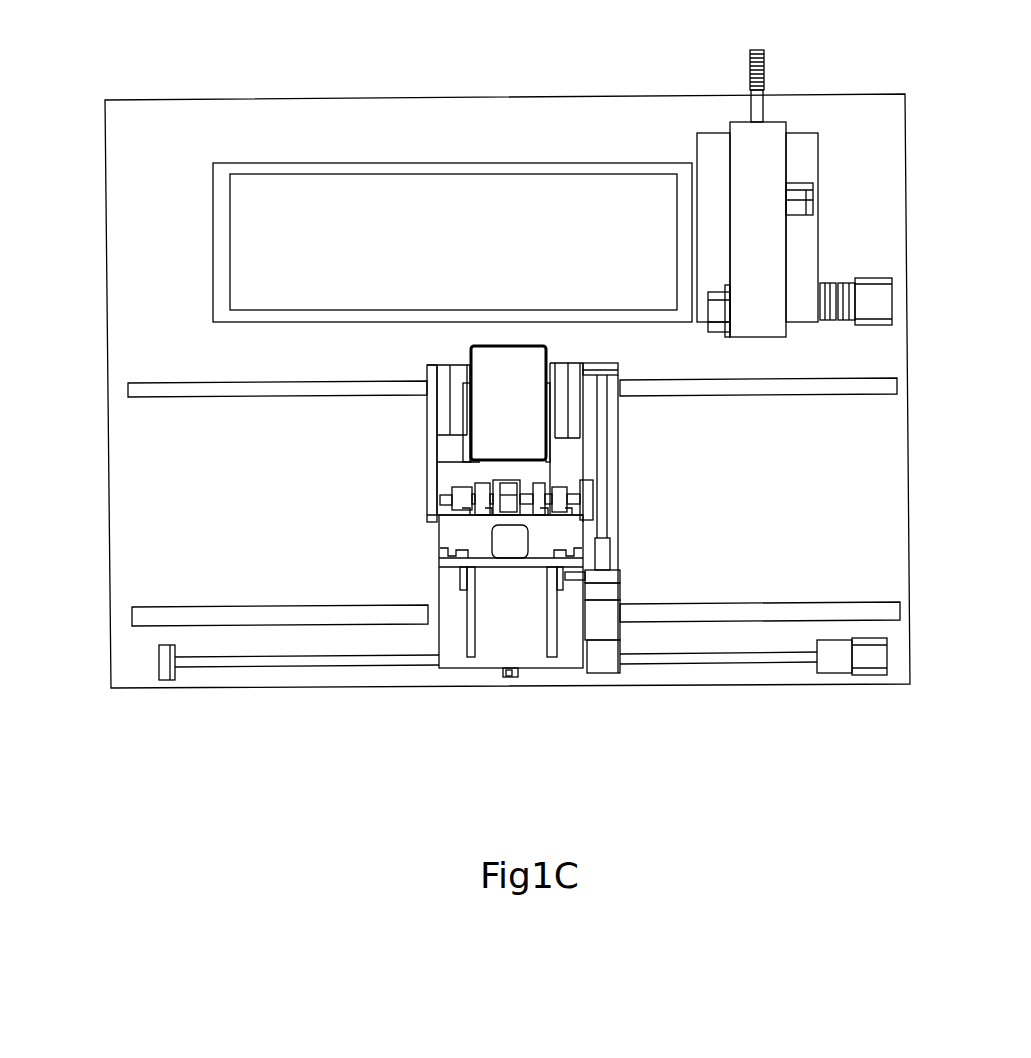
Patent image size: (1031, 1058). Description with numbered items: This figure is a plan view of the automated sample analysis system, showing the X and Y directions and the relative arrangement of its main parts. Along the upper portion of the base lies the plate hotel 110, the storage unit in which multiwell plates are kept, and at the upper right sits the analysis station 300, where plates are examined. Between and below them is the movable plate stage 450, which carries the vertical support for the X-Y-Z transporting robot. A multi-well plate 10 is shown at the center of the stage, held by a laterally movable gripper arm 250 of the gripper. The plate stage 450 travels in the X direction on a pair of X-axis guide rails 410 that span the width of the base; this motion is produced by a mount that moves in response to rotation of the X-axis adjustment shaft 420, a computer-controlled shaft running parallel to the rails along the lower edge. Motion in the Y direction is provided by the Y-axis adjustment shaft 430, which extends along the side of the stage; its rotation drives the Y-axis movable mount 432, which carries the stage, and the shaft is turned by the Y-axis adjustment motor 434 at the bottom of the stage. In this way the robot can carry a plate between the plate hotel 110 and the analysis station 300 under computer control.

The multi-well plate 10 is at (522, 423).
The plate hotel 110 is at (472, 251).
The gripper arm 250 is at (477, 467).
The analysis station 300 is at (842, 148).
The X-axis guide rails 410 is at (563, 502).
The X-axis adjustment shaft 420 is at (673, 658).
The Y-axis adjustment shaft 430 is at (603, 452).
The Y-axis movable mount 432 is at (620, 572).
The Y-axis adjustment motor 434 is at (510, 677).
The movable plate stage 450 is at (530, 631).